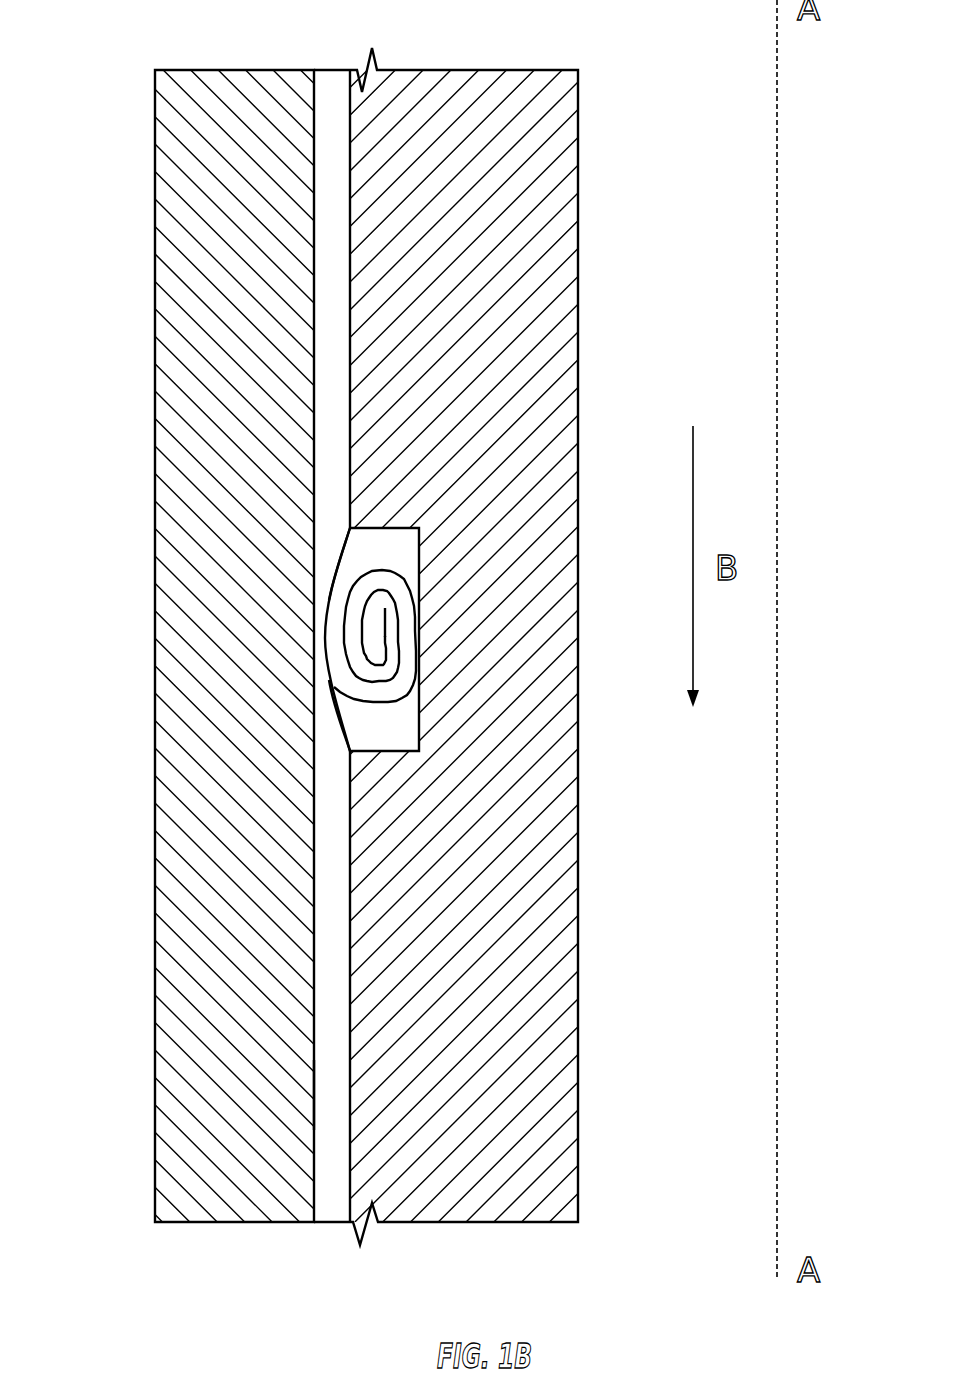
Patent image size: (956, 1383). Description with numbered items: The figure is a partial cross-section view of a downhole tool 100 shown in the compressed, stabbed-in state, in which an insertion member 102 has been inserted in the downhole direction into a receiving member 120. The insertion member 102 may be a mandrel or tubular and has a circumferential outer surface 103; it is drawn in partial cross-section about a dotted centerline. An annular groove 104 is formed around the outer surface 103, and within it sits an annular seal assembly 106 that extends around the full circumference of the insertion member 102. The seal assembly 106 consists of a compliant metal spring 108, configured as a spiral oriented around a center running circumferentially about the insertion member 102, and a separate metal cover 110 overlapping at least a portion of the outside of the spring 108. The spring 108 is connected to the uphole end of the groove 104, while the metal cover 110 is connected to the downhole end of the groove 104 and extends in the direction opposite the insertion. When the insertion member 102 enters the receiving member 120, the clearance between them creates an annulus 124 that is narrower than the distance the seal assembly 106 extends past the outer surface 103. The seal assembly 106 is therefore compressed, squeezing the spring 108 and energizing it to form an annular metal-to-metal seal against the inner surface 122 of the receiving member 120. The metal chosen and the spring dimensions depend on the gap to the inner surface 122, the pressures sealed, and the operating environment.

The downhole tool 100 is at (359, 632).
The insertion member 102 is at (578, 227).
The outer surface 103 is at (348, 430).
The annular groove 104 is at (411, 528).
The seal assembly 106 is at (272, 630).
The spring 108 is at (341, 563).
The metal cover 110 is at (325, 655).
The receiving member 120 is at (147, 1059).
The inner surface 122 is at (313, 1100).
The annulus 124 is at (330, 1170).